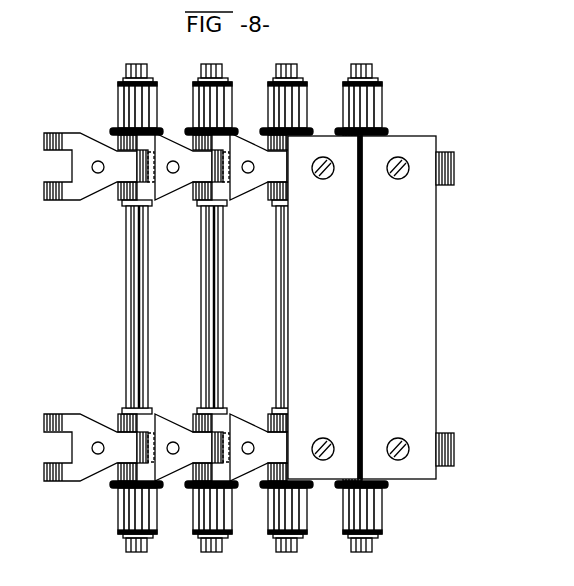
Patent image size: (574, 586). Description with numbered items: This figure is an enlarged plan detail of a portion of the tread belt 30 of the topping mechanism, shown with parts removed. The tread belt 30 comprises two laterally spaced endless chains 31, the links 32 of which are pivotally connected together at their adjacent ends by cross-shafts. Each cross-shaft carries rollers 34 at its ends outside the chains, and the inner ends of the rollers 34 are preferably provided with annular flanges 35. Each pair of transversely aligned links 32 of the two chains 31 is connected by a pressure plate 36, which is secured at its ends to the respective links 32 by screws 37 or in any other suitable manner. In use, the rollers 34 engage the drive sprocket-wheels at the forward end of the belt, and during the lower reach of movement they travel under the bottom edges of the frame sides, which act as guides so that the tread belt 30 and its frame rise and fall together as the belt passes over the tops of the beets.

The tread belt 30 is at (447, 258).
The endless chains 31 is at (95, 198).
The links 32 is at (81, 437).
The rollers 34 is at (130, 513).
The annular flanges 35 is at (133, 320).
The pressure plate 36 is at (323, 307).
The screws 37 is at (322, 439).